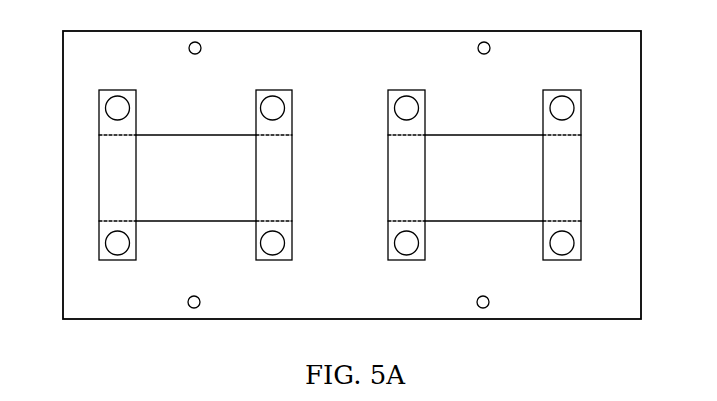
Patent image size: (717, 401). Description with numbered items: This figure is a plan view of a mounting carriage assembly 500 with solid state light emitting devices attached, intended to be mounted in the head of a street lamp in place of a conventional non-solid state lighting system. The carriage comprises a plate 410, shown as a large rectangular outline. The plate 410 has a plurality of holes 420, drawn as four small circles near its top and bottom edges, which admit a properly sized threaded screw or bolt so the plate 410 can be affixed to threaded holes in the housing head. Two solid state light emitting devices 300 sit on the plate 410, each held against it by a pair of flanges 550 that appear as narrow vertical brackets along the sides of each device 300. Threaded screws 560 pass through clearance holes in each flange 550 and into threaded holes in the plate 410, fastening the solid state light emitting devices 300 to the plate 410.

The solid state light emitting device 300 is at (340, 178).
The plate 410 is at (63, 48).
The holes 420 is at (201, 47).
The assembly 500 is at (662, 88).
The flange 550 is at (131, 110).
The threaded screws 560 is at (131, 104).